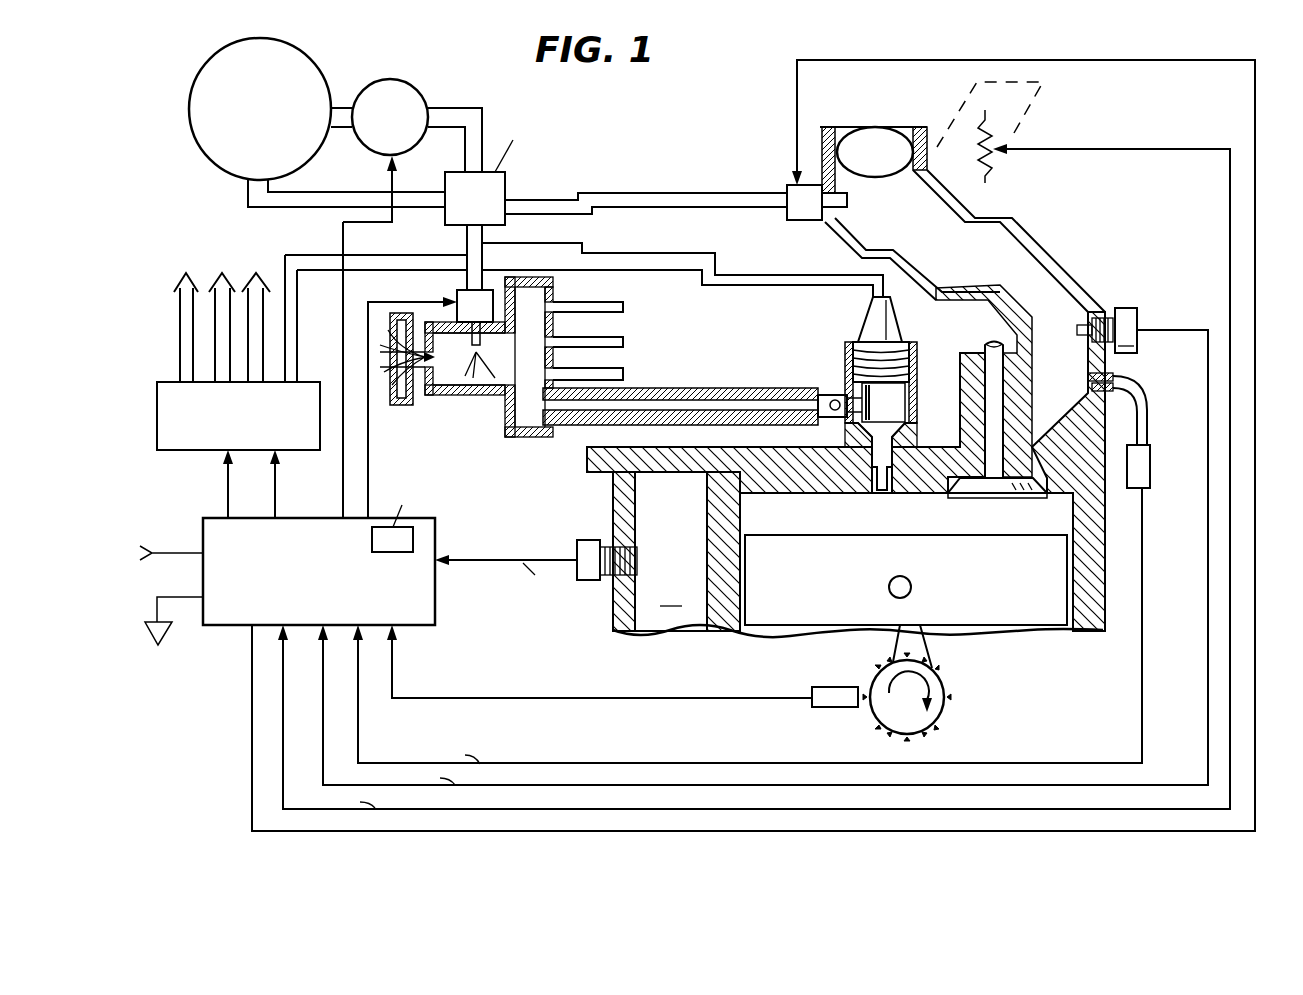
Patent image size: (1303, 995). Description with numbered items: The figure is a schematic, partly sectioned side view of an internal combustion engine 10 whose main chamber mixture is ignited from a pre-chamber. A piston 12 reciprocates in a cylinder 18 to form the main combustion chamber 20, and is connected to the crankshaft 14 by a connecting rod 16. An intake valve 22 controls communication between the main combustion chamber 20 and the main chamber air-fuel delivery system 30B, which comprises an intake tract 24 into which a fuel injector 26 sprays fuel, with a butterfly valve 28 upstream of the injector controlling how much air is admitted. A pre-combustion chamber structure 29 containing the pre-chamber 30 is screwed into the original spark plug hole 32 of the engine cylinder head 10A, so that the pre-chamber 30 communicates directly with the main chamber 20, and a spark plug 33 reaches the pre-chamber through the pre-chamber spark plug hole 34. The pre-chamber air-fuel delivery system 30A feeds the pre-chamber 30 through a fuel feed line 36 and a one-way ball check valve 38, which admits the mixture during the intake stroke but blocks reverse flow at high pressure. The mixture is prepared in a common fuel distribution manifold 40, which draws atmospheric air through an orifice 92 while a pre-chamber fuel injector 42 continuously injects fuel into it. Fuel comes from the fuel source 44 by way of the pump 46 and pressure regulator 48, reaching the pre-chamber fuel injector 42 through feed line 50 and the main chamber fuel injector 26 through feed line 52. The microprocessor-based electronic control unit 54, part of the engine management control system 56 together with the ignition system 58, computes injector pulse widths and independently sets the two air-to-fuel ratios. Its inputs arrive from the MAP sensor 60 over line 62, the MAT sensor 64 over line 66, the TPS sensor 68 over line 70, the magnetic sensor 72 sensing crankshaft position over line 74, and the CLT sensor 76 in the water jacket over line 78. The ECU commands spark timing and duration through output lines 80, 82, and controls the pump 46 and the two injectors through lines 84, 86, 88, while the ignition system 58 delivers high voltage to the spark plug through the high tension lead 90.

The internal combustion engine 10 is at (915, 847).
The engine cylinder head 10A is at (588, 449).
The piston 12 is at (968, 580).
The crankshaft 14 is at (878, 676).
The connecting rod 16 is at (932, 653).
The cylinder 18 is at (1077, 518).
The main combustion chamber 20 is at (813, 523).
The intake valve 22 is at (997, 433).
The intake tract 24 is at (1050, 303).
The fuel injector 26 is at (848, 210).
The butterfly valve 28 is at (868, 127).
The pre-combustion chamber structure 29 is at (905, 370).
The pre-chamber 30 is at (893, 415).
The pre-chamber air-fuel delivery system 30A is at (688, 373).
The main chamber air-fuel delivery system 30B is at (1065, 248).
The original spark plug hole 32 is at (888, 500).
The spark plug 33 is at (892, 330).
The pre-chamber spark plug hole 34 is at (900, 378).
The fuel feed line 36 is at (626, 370).
The one-way ball check valve 38 is at (825, 393).
The fuel distribution manifold 40 is at (512, 404).
The pre-chamber fuel injector 42 is at (480, 342).
The fuel source 44 is at (180, 98).
The pump 46 is at (362, 78).
The pressure regulator 48 is at (490, 140).
The feed line 50 is at (465, 285).
The feed line 52 is at (618, 186).
The electronic control unit 54 is at (428, 604).
The engine management control system 56 is at (152, 514).
The ignition system 58 is at (325, 375).
The MAP sensor 60 is at (1150, 483).
The line 62 is at (1142, 713).
The MAT sensor 64 is at (1127, 328).
The line 66 is at (1208, 387).
The TPS sensor 68 is at (1020, 188).
The line 70 is at (1230, 519).
The magnetic sensor 72 is at (812, 690).
The line 74 is at (612, 698).
The CLT sensor 76 is at (577, 548).
The line 78 is at (492, 562).
The output line 80 is at (228, 502).
The output line 82 is at (278, 497).
The line 84 is at (343, 495).
The line 86 is at (368, 470).
The line 88 is at (412, 831).
The high tension lead 90 is at (222, 272).
The orifice 92 is at (388, 385).